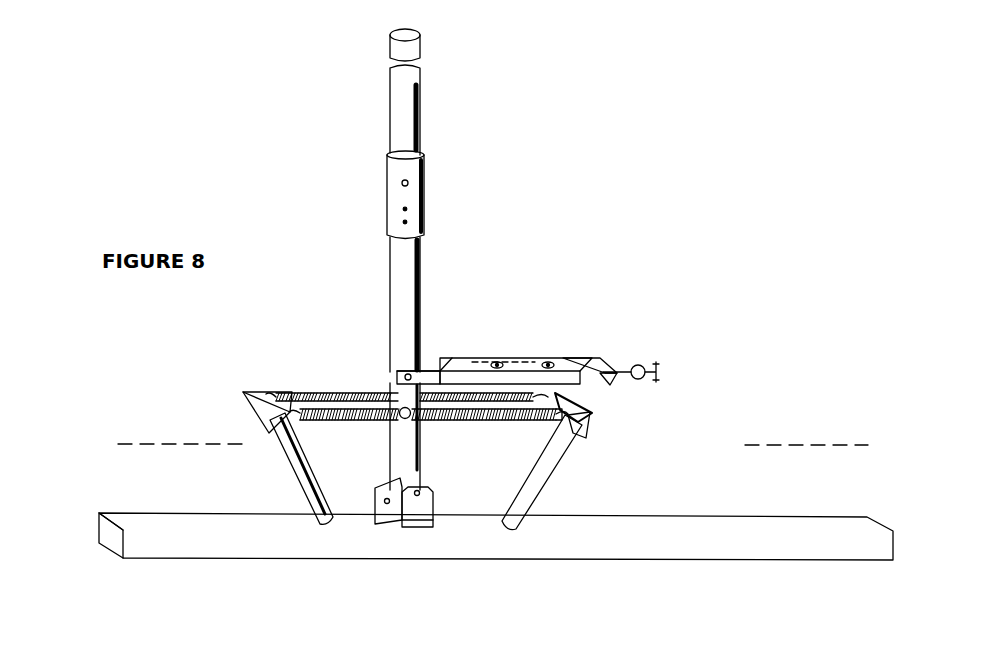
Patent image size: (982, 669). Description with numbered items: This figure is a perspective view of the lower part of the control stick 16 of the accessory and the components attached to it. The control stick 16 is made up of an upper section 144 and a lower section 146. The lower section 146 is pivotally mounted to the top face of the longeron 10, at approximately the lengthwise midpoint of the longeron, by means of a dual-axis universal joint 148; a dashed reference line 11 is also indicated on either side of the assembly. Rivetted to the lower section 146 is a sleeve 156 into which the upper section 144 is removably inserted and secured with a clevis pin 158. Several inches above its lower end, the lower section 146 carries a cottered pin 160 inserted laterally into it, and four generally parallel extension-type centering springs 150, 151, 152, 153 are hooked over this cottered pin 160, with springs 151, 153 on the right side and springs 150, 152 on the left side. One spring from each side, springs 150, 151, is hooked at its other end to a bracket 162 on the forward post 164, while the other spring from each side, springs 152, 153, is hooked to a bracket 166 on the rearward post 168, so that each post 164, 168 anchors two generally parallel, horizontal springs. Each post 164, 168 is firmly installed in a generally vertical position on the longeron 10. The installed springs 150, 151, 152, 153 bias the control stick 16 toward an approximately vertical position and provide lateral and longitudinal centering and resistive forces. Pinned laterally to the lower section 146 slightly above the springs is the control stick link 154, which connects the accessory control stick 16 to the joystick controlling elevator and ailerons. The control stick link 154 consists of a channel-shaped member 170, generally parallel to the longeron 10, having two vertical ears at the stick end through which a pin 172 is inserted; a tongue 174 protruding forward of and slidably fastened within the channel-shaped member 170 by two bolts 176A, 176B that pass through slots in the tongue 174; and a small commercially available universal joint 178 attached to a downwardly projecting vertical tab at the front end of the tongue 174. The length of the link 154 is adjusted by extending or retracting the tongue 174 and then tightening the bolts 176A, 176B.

The longeron 10 is at (136, 513).
The reference line 11 is at (195, 446).
The control stick 16 is at (445, 108).
The upper section 144 is at (391, 118).
The lower section 146 is at (427, 482).
The dual-axis universal joint 148 is at (375, 488).
The centering spring 150 is at (413, 368).
The centering spring 151 is at (548, 424).
The centering spring 152 is at (303, 392).
The centering spring 153 is at (318, 420).
The control stick link 154 is at (588, 395).
The sleeve 156 is at (387, 207).
The clevis pin 158 is at (410, 183).
The cottered pin 160 is at (414, 418).
The bracket 162 is at (590, 425).
The forward post 164 is at (548, 462).
The bracket 166 is at (266, 392).
The rearward post 168 is at (272, 430).
The channel-shaped member 170 is at (397, 376).
The pin 172 is at (437, 392).
The tongue 174 is at (585, 357).
The bolt 176A is at (497, 362).
The bolt 176B is at (547, 362).
The universal joint 178 is at (638, 365).